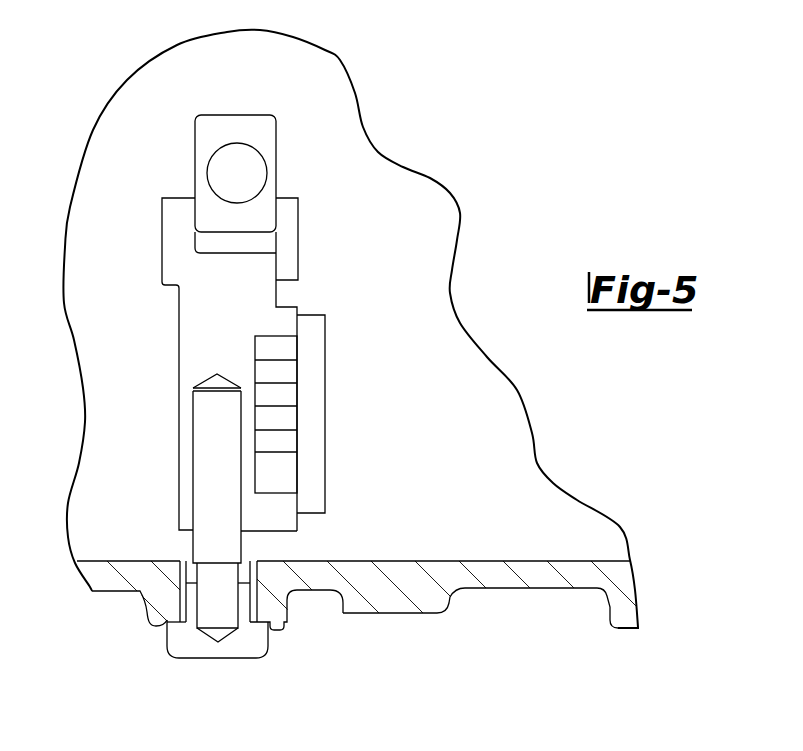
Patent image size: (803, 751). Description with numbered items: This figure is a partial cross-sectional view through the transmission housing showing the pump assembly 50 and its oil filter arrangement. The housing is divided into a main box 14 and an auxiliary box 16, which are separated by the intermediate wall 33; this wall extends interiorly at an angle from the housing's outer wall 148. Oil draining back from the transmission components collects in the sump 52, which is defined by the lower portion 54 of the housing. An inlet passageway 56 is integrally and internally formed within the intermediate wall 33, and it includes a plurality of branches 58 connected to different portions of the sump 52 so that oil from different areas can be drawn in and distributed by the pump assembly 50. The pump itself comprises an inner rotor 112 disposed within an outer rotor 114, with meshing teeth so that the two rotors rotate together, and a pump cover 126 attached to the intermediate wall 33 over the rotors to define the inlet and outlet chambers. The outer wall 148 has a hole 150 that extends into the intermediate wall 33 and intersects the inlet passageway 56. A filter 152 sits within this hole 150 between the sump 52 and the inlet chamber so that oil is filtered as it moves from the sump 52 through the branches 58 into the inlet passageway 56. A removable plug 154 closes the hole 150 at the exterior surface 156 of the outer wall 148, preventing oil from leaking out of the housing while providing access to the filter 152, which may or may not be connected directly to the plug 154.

The main box 14 is at (109, 600).
The auxiliary box 16 is at (553, 600).
The intermediate wall 33 is at (175, 252).
The pump assembly 50 is at (330, 283).
The sump 52 is at (440, 561).
The lower portion 54 is at (486, 615).
The inlet passageway 56 is at (194, 442).
The branches 58 is at (184, 533).
The inner rotor 112 is at (287, 373).
The outer rotor 114 is at (288, 352).
The pump cover 126 is at (310, 423).
The outer wall 148 is at (415, 600).
The hole 150 is at (238, 583).
The filter 152 is at (205, 492).
The removable plug 154 is at (245, 660).
The exterior surface 156 is at (307, 616).